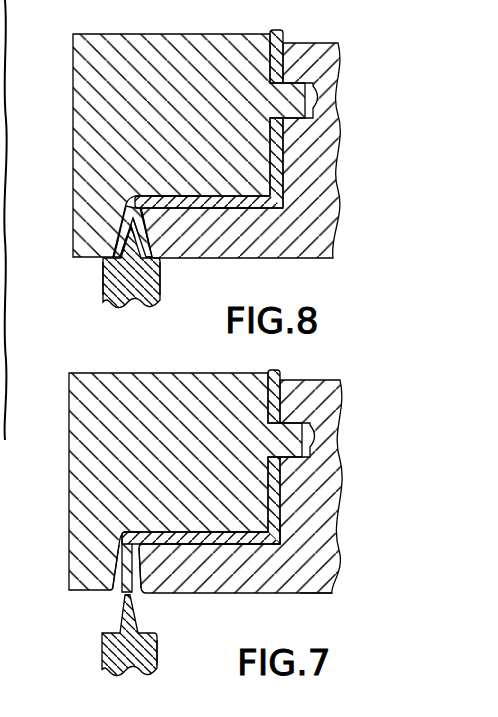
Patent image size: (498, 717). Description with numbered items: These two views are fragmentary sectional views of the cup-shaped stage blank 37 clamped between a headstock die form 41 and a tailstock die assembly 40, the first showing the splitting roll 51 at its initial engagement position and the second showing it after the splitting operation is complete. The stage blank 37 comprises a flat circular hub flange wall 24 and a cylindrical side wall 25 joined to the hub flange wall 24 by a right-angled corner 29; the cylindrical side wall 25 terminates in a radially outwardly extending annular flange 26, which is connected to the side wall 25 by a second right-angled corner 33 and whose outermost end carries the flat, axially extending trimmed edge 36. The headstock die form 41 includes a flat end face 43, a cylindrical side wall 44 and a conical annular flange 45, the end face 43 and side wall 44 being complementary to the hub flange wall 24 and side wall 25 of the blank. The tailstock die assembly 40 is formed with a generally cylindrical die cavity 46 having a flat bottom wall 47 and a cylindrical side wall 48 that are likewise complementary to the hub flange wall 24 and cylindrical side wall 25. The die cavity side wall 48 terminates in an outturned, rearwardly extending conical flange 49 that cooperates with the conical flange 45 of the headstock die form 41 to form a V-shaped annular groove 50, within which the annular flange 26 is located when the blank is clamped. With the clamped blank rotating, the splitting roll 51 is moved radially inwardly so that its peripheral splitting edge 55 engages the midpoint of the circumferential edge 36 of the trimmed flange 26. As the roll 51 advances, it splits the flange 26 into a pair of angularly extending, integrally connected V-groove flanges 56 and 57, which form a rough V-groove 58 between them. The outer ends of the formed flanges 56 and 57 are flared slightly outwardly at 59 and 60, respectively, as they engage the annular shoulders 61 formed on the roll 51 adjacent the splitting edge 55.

In FIG. 8, the headstock die form 41 is at (125, 85).
In FIG. 7, the headstock die form 41 is at (90, 457).
In FIG. 8, the hub flange wall 24 is at (337, 72).
In FIG. 7, the hub flange wall 24 is at (318, 384).
In FIG. 8, the end face 43 is at (268, 65).
In FIG. 7, the end face 43 is at (266, 398).
In FIG. 8, the bottom wall 47 is at (285, 152).
In FIG. 7, the bottom wall 47 is at (330, 474).
In FIG. 8, the cylindrical side wall 25 is at (214, 196).
In FIG. 7, the cylindrical side wall 25 is at (154, 531).
In FIG. 8, the cylindrical side wall 44 is at (172, 195).
In FIG. 7, the cylindrical side wall 44 is at (227, 545).
In FIG. 8, the die cavity 46 is at (243, 209).
In FIG. 7, the die cavity 46 is at (248, 547).
In FIG. 8, the conical annular flange 45 is at (117, 240).
In FIG. 7, the conical annular flange 45 is at (116, 570).
In FIG. 8, the splitting roll 51 is at (128, 310).
In FIG. 7, the splitting roll 51 is at (104, 663).
In FIG. 8, the splitting edge 55 is at (118, 245).
In FIG. 7, the splitting edge 55 is at (124, 606).
In FIG. 8, the V-groove flange 56 is at (121, 238).
In FIG. 8, the V-groove flange 57 is at (140, 233).
In FIG. 8, the rough V-groove 58 is at (149, 252).
In FIG. 8, the flared outer end 59 is at (112, 260).
In FIG. 8, the flared outer end 60 is at (152, 260).
In FIG. 8, the annular shoulders 61 is at (106, 280).
In FIG. 7, the annular shoulders 61 is at (158, 645).
In FIG. 7, the cup-shaped stage blank 37 is at (210, 531).
In FIG. 7, the second right-angled corner 33 is at (131, 531).
In FIG. 7, the annular flange 26 is at (120, 543).
In FIG. 7, the right-angled corner 29 is at (278, 540).
In FIG. 7, the cylindrical side wall 48 is at (186, 547).
In FIG. 7, the V-shaped annular groove 50 is at (116, 589).
In FIG. 7, the edge 36 is at (122, 586).
In FIG. 7, the conical flange 49 is at (140, 574).
In FIG. 7, the tailstock die assembly 40 is at (320, 596).